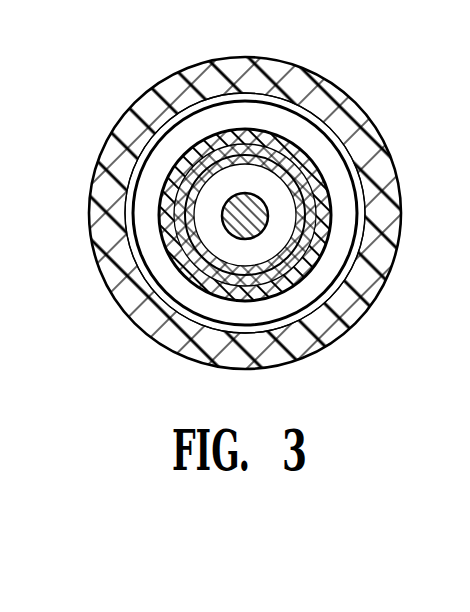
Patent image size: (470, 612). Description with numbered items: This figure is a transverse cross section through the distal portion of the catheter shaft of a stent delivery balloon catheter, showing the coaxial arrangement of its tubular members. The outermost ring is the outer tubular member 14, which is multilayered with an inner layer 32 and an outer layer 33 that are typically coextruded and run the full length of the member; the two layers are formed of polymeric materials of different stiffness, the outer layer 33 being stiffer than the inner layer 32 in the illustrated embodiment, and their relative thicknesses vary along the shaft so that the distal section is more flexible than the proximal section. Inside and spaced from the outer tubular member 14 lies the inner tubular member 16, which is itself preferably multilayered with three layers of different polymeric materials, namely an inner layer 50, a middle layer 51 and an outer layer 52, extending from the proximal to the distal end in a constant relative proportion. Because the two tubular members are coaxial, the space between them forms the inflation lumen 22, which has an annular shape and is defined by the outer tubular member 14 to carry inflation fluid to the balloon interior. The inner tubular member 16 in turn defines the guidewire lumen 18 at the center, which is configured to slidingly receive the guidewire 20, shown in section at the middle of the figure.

The outer tubular member 14 is at (267, 222).
The inner tubular member 16 is at (180, 150).
The guidewire lumen 18 is at (282, 227).
The guidewire 20 is at (262, 197).
The inflation lumen 22 is at (337, 185).
The inner layer 32 is at (345, 338).
The outer layer 33 is at (363, 285).
The inner layer 50 is at (155, 287).
The middle layer 51 is at (177, 255).
The outer layer 52 is at (160, 211).